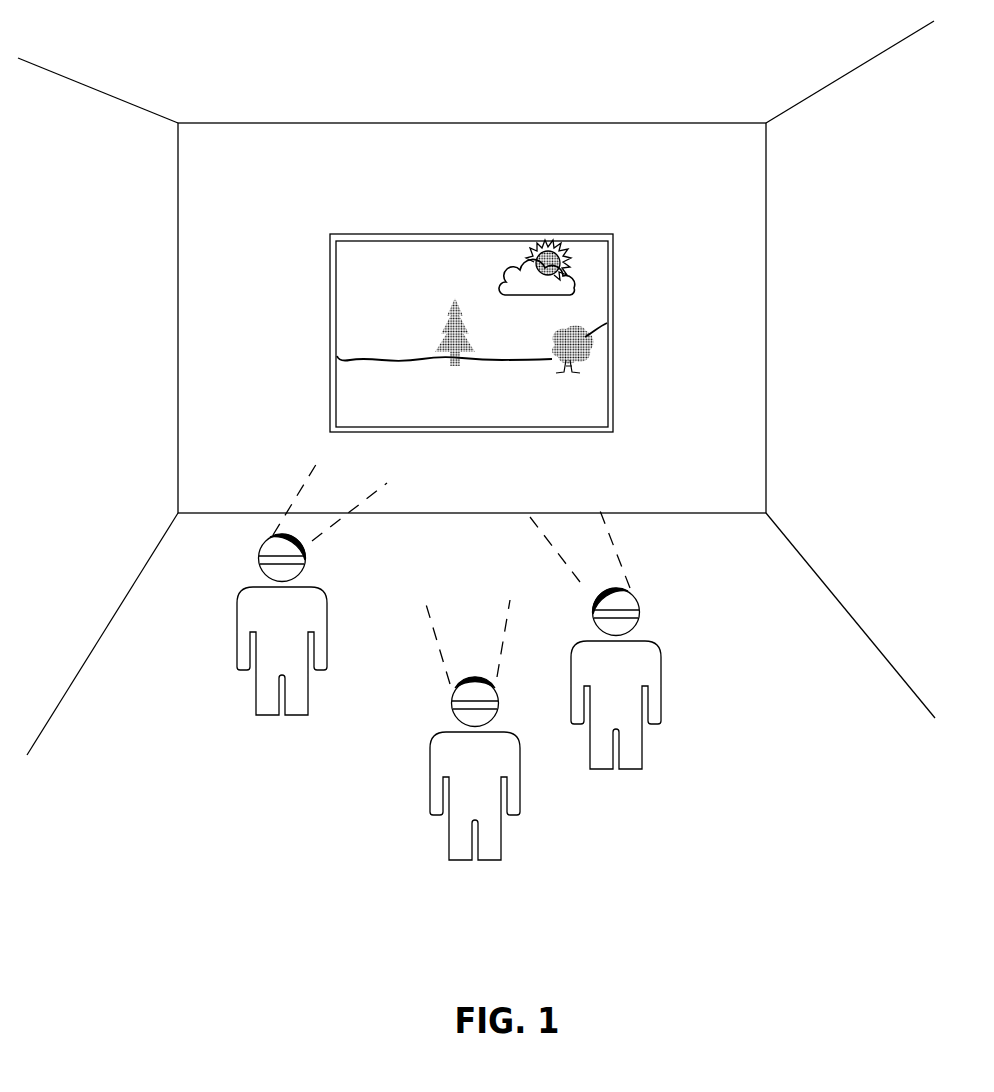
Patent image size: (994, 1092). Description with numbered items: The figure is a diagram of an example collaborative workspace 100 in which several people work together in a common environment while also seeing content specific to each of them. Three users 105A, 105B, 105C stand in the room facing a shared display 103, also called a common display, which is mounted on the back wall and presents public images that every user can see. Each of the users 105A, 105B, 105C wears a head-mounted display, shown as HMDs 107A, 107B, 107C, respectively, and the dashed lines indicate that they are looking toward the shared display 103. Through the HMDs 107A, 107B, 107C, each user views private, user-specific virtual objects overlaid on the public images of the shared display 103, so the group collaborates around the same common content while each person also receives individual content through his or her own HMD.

The collaborative workspace 100 is at (446, 79).
The shared display 103 is at (613, 233).
The user 105A is at (268, 714).
The user 105B is at (463, 857).
The user 105C is at (607, 766).
The HMD 107A is at (258, 549).
The HMD 107B is at (452, 700).
The HMD 107C is at (592, 614).